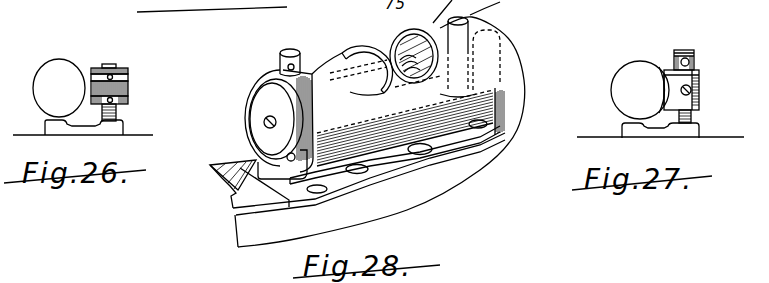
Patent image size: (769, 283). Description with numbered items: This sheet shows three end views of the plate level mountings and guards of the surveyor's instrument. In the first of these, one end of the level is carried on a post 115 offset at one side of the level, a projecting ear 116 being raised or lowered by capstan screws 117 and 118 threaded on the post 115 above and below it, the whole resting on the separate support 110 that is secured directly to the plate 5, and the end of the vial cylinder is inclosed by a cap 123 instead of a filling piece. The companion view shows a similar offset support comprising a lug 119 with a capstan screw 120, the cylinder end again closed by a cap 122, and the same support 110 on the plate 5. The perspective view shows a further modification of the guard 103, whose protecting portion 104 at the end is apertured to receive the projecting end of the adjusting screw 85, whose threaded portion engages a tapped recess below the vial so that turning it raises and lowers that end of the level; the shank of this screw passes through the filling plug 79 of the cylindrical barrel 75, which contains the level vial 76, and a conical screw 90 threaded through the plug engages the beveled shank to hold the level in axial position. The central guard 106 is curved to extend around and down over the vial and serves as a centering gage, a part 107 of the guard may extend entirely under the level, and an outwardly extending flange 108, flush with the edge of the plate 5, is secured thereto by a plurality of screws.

In FIG. 28, the plate 5 is at (300, 217).
In FIG. 28, the cylindrical barrel 75 is at (404, 75).
In FIG. 28, the level vial 76 is at (352, 77).
In FIG. 28, the filling plug 79 is at (263, 107).
In FIG. 28, the adjusting screw 85 is at (288, 50).
In FIG. 28, the conical screw 90 is at (262, 119).
In FIG. 28, the guard 103 is at (377, 84).
In FIG. 28, the protecting portion 104 is at (263, 73).
In FIG. 28, the central guard 106 is at (353, 48).
In FIG. 28, the part extending under the level 107 is at (211, 163).
In FIG. 28, the outwardly extending flange 108 is at (409, 167).
In FIG. 26, the support 110 is at (62, 128).
In FIG. 27, the support 110 is at (691, 133).
In FIG. 26, the post 115 is at (116, 108).
In FIG. 26, the projecting ear 116 is at (128, 83).
In FIG. 26, the capstan screw 117 is at (122, 77).
In FIG. 26, the capstan screw 118 is at (128, 96).
In FIG. 27, the lug 119 is at (687, 80).
In FIG. 27, the capstan screw 120 is at (701, 33).
In FIG. 27, the cap 122 is at (626, 90).
In FIG. 26, the cap 123 is at (85, 46).